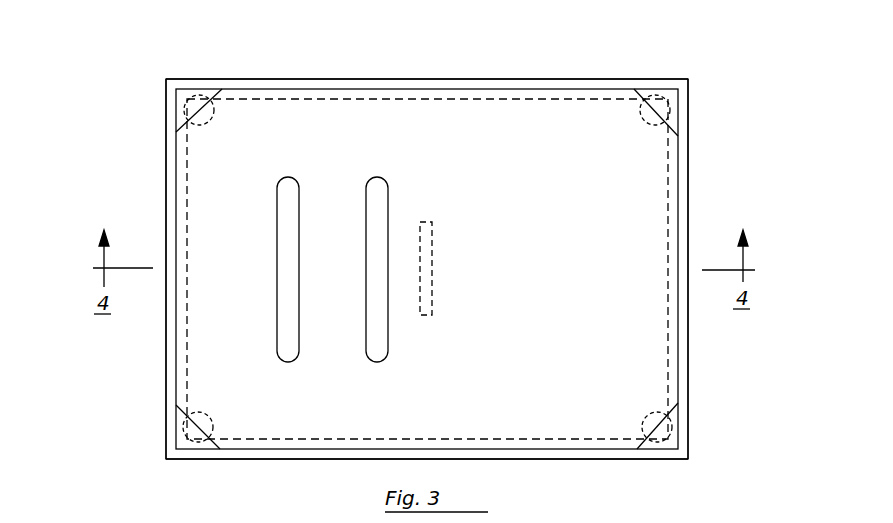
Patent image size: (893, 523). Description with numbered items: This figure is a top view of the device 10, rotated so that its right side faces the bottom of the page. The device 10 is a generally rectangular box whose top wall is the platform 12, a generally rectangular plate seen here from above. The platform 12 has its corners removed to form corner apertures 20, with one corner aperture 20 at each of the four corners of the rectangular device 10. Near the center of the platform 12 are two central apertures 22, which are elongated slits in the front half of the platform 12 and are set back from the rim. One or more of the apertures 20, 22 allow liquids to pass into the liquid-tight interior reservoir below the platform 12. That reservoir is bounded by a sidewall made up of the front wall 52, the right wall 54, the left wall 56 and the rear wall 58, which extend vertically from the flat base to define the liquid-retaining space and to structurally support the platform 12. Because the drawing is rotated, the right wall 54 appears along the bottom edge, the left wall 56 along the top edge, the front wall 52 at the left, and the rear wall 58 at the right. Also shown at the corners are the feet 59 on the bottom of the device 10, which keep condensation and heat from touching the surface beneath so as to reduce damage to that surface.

The device 10 is at (658, 64).
The platform 12 is at (513, 283).
The corner apertures 20 is at (666, 109).
The central apertures 22 is at (374, 233).
The front wall 52 is at (166, 162).
The right wall 54 is at (305, 460).
The left wall 56 is at (287, 80).
The rear wall 58 is at (688, 172).
The feet 59 is at (643, 120).